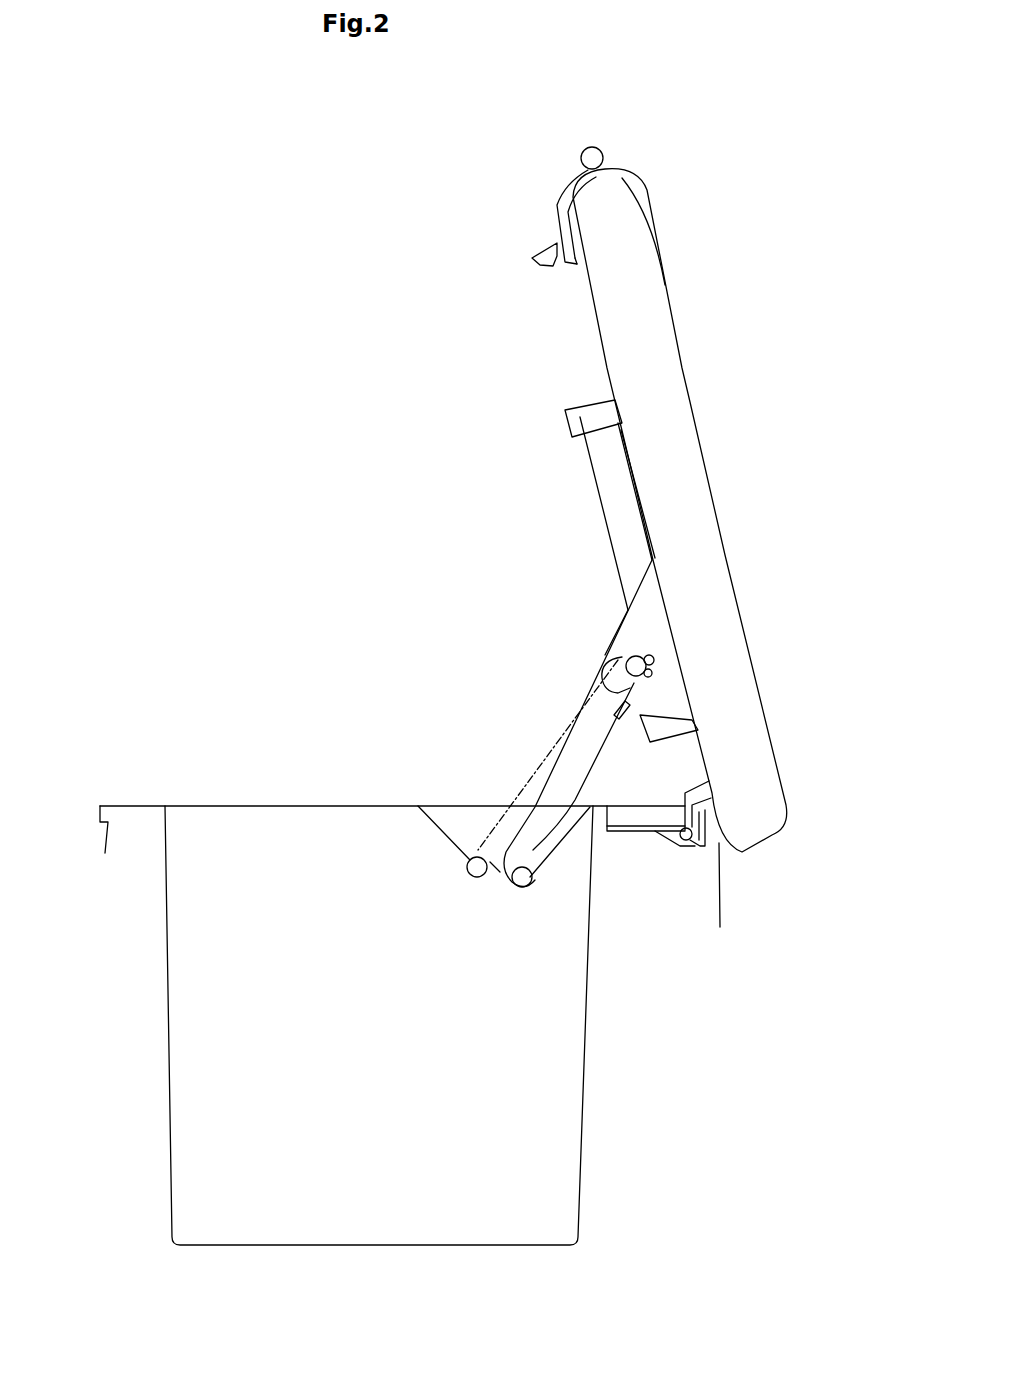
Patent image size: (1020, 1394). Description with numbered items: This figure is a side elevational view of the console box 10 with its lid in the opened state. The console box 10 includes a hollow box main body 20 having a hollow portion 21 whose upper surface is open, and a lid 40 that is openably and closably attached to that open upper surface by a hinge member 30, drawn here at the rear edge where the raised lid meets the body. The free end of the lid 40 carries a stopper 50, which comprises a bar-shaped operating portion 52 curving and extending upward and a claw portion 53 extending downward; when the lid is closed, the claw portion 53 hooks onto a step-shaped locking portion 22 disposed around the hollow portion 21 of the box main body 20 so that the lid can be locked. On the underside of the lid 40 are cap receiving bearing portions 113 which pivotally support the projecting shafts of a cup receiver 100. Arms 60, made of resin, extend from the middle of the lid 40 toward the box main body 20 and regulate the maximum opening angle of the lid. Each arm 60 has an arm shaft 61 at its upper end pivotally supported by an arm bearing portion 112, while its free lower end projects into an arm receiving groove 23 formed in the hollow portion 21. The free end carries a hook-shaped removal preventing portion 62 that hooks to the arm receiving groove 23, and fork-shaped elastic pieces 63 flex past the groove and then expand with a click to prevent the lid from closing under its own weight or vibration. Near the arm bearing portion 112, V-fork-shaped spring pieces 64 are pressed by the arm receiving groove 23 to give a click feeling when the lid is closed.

The console box 10 is at (205, 340).
The box main body 20 is at (137, 828).
The hollow portion 21 is at (340, 1228).
The step-shaped locking portion 22 is at (100, 823).
The arm receiving grooves 23 is at (492, 887).
The hinge member 30 is at (697, 848).
The lid 40 is at (660, 333).
The stopper 50 is at (560, 200).
The operating portion 52 is at (588, 150).
The claw portion 53 is at (531, 260).
The arms 60 is at (562, 774).
The arm shafts 61 is at (612, 660).
The removal preventing portions 62 is at (467, 880).
The elastic pieces 63 is at (533, 890).
The spring pieces 64 is at (628, 722).
The cup receiver 100 is at (605, 480).
The arm bearing portions 112 is at (624, 632).
The cap receiving bearing portions 113 is at (578, 410).